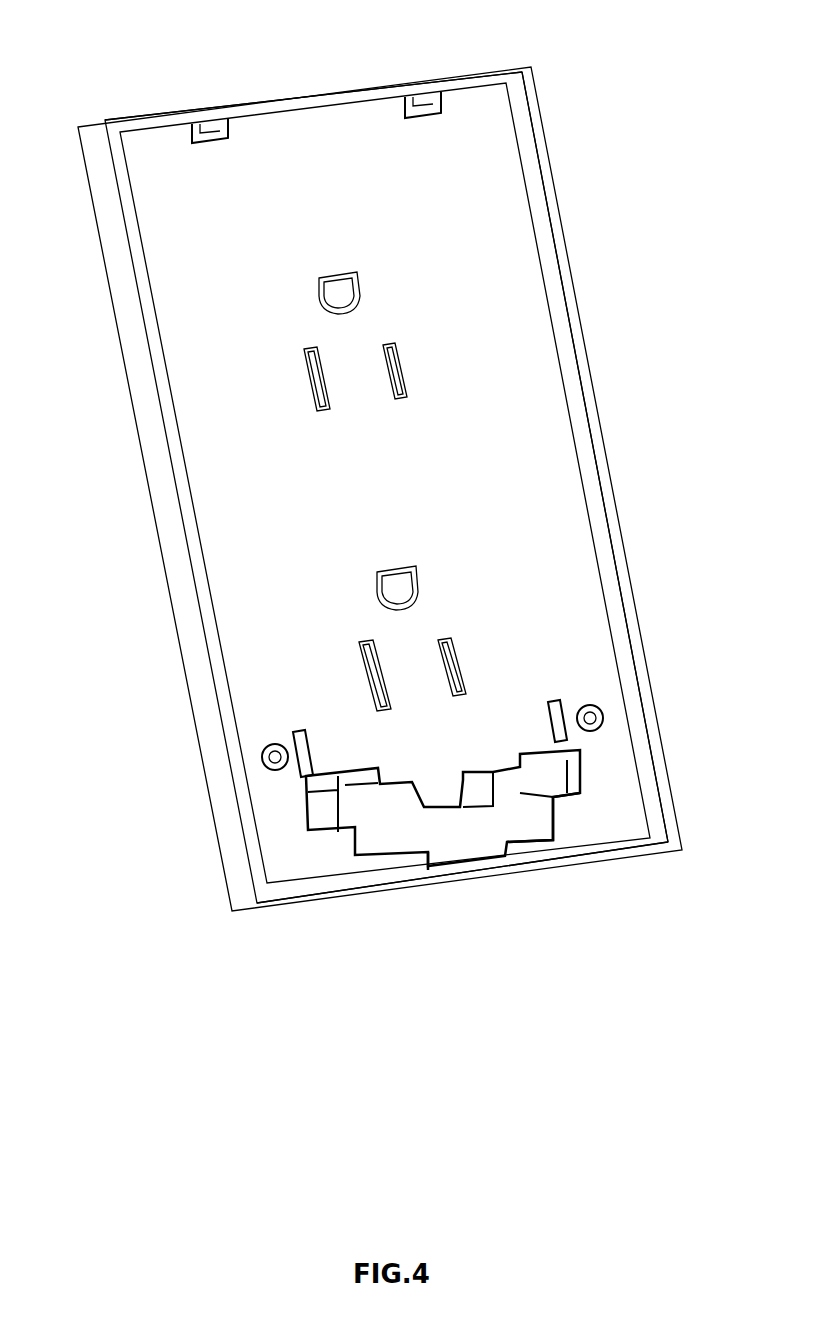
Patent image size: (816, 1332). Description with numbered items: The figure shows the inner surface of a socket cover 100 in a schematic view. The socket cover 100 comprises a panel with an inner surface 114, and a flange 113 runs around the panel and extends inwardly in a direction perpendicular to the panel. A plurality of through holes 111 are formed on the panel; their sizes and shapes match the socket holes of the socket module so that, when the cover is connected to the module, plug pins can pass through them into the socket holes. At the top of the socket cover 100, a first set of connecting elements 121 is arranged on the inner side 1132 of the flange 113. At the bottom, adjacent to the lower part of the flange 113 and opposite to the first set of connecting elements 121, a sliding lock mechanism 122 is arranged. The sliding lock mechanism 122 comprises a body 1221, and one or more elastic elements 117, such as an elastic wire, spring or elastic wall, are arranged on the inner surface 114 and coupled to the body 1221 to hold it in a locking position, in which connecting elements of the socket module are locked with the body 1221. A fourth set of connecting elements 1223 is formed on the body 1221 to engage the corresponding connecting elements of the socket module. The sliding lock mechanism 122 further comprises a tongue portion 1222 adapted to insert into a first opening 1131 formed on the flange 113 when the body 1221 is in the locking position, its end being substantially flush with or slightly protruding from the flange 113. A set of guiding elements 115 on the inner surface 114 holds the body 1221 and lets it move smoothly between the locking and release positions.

The socket cover 100 is at (657, 44).
The through holes 111 is at (400, 383).
The flange 113 is at (226, 818).
The inner surface 114 is at (530, 440).
The guiding elements 115 is at (323, 801).
The elastic elements 117 is at (576, 743).
The first set of connecting elements 121 is at (212, 128).
The sliding lock mechanism 122 is at (426, 765).
The first opening 1131 is at (476, 884).
The inner side 1132 is at (367, 105).
The body 1221 is at (498, 793).
The tongue portion 1222 is at (428, 858).
The fourth set of connecting elements 1223 is at (540, 773).